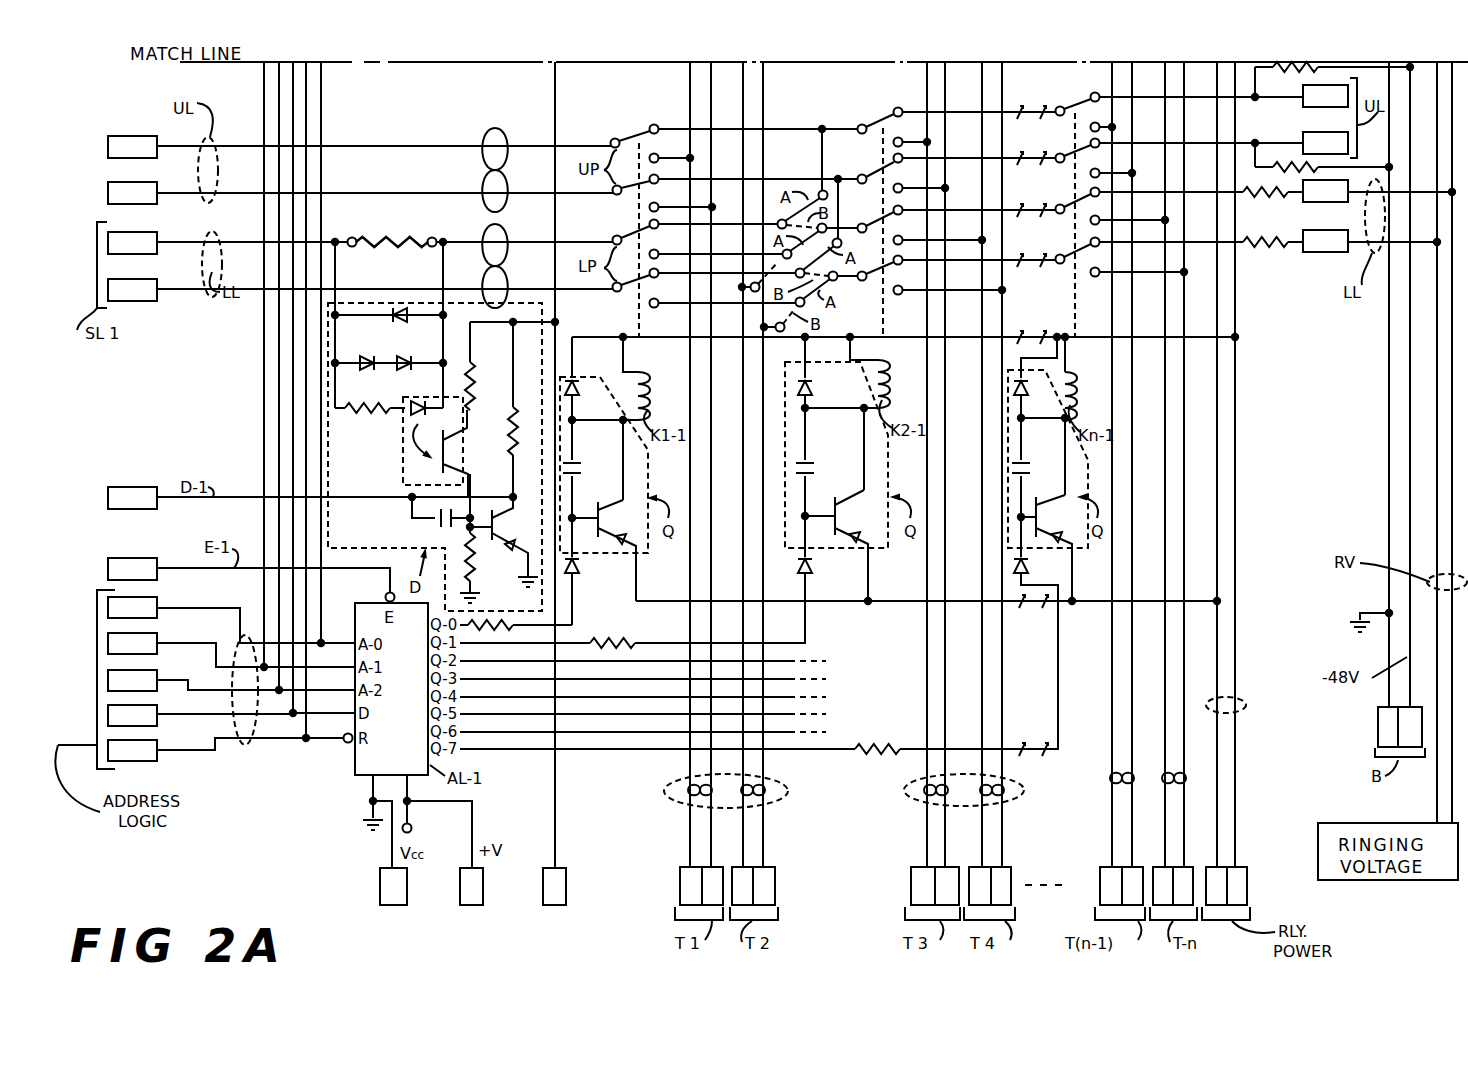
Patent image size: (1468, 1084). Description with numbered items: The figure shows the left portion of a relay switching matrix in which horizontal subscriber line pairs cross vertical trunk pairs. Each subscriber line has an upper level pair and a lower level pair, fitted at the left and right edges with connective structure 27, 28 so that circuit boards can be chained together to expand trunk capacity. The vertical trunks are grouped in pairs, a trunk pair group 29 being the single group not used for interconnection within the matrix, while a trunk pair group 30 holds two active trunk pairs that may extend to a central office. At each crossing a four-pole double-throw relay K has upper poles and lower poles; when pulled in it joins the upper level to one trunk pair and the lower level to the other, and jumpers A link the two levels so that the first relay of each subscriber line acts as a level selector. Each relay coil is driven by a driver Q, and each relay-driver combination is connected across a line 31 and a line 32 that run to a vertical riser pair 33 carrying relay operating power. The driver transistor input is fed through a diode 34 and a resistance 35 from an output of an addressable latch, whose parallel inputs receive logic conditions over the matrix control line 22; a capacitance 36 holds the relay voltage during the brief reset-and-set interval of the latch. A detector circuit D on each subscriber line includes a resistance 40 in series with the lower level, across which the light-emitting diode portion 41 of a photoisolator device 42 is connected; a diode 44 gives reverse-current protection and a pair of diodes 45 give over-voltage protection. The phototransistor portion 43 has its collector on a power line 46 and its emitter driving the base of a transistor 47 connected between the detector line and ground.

The matrix control line 22 is at (249, 745).
The connective structure 27 is at (132, 266).
The connective structure 28 is at (132, 170).
The trunk pair group 29 is at (783, 800).
The trunk pair group 30 is at (905, 797).
The line 31 is at (672, 340).
The line 32 is at (670, 601).
The vertical riser pair 33 is at (1247, 708).
The diode 34 is at (580, 575).
The resistance 35 is at (502, 630).
The capacitance 36 is at (578, 468).
The resistance 40 is at (403, 240).
The light-emitting diode portion 41 is at (405, 418).
The photoisolator device 42 is at (400, 460).
The phototransistor portion 43 is at (442, 470).
The diode 44 is at (403, 323).
The pair of diodes 45 is at (398, 358).
The line 46 is at (556, 788).
The transistor 47 is at (508, 549).